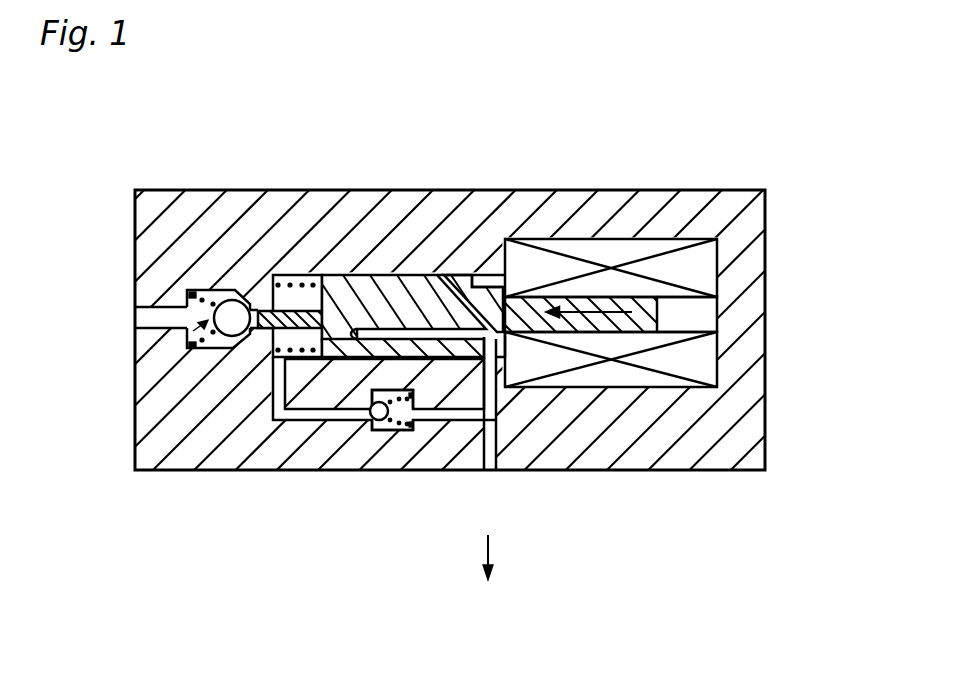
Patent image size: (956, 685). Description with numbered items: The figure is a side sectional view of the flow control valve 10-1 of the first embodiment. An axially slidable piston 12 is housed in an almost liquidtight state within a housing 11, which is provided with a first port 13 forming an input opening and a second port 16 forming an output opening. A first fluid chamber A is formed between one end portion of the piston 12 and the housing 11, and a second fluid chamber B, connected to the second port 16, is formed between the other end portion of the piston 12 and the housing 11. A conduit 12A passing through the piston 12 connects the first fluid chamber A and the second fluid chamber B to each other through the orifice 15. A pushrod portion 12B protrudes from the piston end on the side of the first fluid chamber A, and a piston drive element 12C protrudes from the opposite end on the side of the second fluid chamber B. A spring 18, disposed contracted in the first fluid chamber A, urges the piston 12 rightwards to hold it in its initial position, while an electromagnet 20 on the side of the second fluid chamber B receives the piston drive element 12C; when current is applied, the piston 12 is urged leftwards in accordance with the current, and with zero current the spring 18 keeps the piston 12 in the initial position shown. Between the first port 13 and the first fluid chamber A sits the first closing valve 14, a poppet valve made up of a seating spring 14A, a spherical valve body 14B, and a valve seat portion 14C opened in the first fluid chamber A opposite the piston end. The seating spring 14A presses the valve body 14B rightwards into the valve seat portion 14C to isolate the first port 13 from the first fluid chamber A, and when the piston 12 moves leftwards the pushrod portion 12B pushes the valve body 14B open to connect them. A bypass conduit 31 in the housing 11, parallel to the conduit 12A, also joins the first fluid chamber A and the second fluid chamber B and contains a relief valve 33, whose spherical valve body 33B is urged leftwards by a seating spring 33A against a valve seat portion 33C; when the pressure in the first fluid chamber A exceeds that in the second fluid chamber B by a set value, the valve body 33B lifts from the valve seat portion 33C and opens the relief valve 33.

The flow control valve 10-1 is at (645, 186).
The housing 11 is at (153, 247).
The piston 12 is at (390, 297).
The conduit 12A is at (440, 298).
The pushrod portion 12B is at (336, 274).
The piston drive element 12C is at (578, 300).
The first port 13 is at (152, 327).
The first closing valve 14 is at (188, 350).
The seating spring 14A is at (198, 344).
The spherical valve body 14B is at (220, 338).
The valve seat portion 14C is at (242, 293).
The orifice 15 is at (327, 418).
The second port 16 is at (492, 462).
The spring 18 is at (283, 296).
The electromagnet 20 is at (697, 262).
The bypass conduit 31 is at (278, 420).
The relief valve 33 is at (418, 418).
The seating spring 33A is at (406, 426).
The spherical valve body 33B is at (371, 432).
The valve seat portion 33C is at (400, 432).
The first fluid chamber A is at (255, 305).
The second fluid chamber B is at (485, 283).